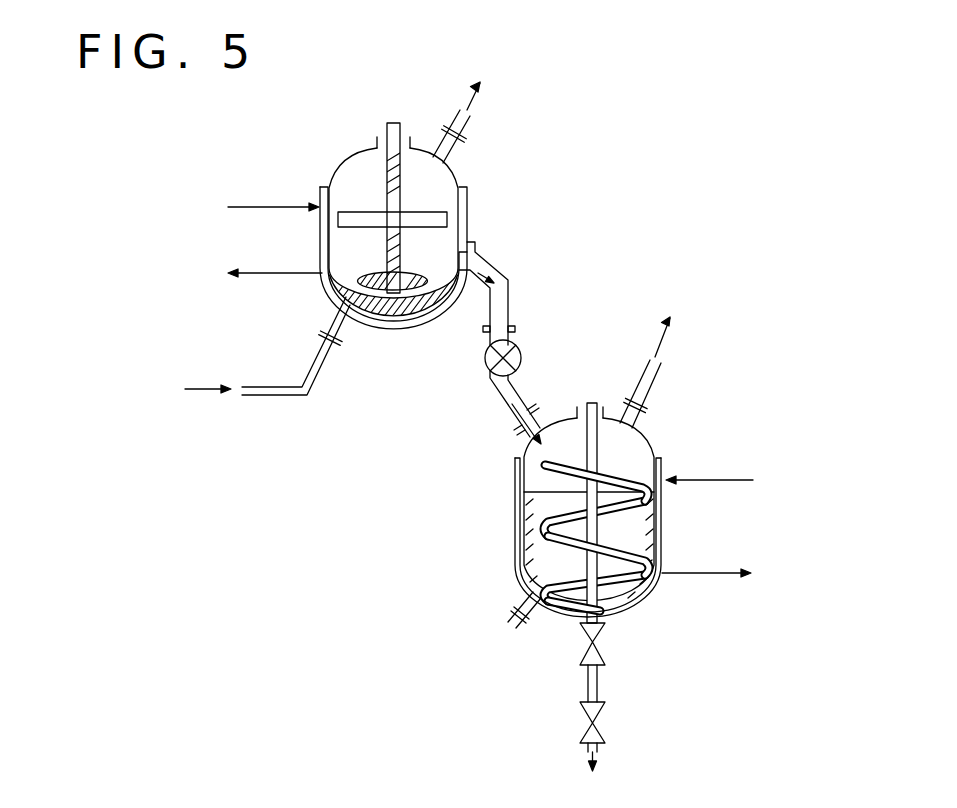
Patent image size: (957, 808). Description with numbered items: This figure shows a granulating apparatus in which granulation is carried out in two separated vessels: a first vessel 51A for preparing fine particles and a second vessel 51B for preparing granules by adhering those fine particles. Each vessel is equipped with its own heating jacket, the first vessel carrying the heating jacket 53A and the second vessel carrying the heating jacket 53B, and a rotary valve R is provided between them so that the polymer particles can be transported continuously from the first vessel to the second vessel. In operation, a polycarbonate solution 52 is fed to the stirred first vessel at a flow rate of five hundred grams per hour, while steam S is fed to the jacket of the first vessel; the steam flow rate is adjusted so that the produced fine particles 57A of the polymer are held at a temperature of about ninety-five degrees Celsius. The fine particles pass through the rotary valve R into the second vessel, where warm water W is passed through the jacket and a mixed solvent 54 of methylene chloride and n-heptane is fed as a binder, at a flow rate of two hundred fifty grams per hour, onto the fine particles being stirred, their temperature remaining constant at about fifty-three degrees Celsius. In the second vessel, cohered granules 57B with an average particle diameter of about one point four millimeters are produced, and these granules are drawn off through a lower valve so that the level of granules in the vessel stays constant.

The first reaction vessel 51A is at (338, 148).
The heating jacket 53A is at (320, 238).
The fine particles 57A is at (426, 318).
The polycarbonate solution 52 is at (248, 352).
The steam S is at (210, 203).
The rotary valve R is at (524, 352).
The second vessel 51B is at (488, 517).
The heating jacket 53B is at (517, 548).
The cohered granules 57B is at (645, 597).
The mixed solvent 54 is at (517, 640).
The warm water W is at (772, 481).